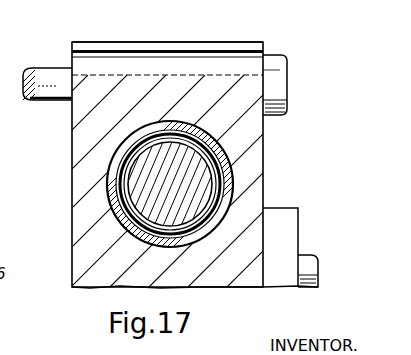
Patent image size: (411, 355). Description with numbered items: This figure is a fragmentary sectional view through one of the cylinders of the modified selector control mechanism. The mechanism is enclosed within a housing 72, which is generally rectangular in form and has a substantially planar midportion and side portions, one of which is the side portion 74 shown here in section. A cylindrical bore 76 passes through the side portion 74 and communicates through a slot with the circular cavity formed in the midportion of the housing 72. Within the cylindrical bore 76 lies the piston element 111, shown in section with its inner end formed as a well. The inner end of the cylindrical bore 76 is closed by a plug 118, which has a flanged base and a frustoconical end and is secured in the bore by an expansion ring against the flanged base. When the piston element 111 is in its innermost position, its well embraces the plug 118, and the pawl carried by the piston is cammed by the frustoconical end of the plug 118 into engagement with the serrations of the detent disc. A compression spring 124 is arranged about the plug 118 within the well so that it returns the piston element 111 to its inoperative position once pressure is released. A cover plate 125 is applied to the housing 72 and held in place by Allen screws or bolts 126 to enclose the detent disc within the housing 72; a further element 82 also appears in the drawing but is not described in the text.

The housing 72 is at (62, 183).
The side portion 74 is at (181, 42).
The tube 82 is at (44, 86).
The cylindrical bore 76 is at (232, 167).
The compression spring 124 is at (124, 203).
The piston element 111 is at (232, 190).
The plug 118 is at (145, 163).
The cover plate 125 is at (289, 228).
The Allen screws or bolts 126 is at (308, 274).